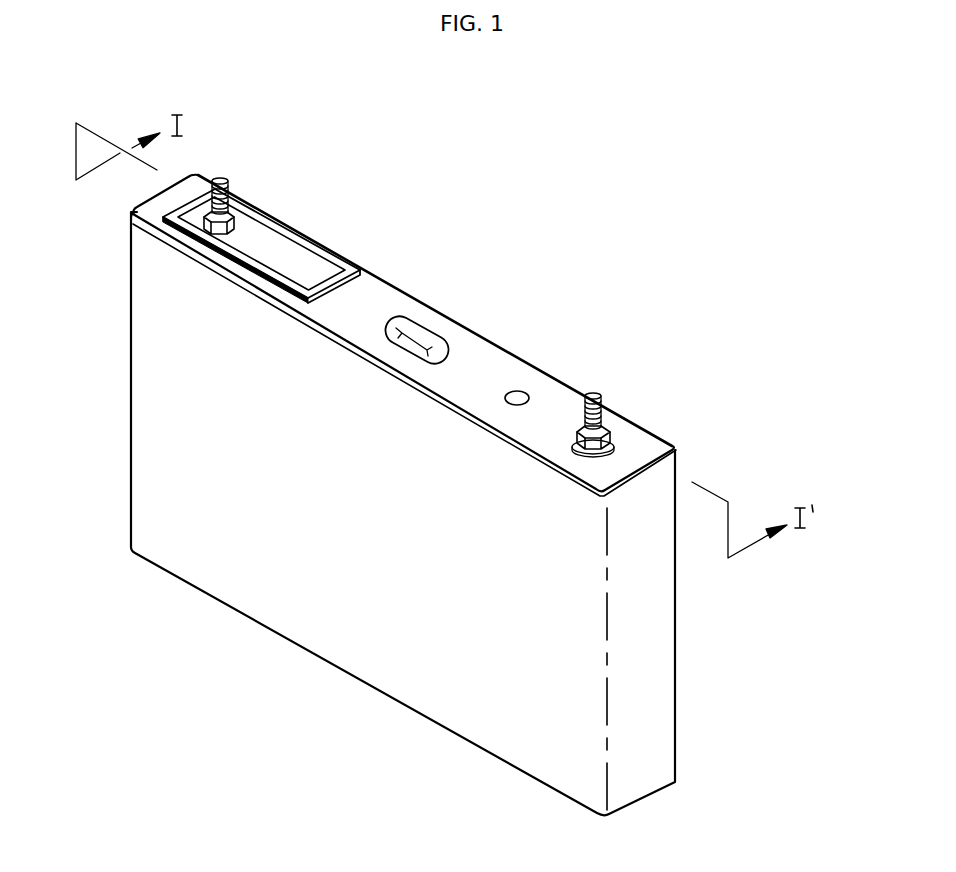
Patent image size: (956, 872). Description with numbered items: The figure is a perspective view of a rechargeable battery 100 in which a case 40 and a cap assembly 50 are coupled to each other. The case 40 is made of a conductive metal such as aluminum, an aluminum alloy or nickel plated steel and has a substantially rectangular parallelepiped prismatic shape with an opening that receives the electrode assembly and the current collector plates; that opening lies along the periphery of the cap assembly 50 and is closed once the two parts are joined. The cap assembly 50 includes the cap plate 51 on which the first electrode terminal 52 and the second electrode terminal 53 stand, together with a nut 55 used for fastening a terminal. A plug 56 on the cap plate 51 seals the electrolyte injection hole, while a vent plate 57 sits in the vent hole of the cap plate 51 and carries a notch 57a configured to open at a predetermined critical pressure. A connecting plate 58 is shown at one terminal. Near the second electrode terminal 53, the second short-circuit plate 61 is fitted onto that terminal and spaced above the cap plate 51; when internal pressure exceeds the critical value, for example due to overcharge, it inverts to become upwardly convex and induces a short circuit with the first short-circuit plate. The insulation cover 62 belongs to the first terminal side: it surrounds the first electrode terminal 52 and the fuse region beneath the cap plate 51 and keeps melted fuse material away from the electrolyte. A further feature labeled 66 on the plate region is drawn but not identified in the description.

The rechargeable battery 100 is at (452, 156).
The case 40 is at (347, 653).
The cap assembly 50 is at (505, 342).
The cap plate 51 is at (388, 303).
The first electrode terminal 52 is at (595, 392).
The second electrode terminal 53 is at (221, 180).
The nut 55 is at (207, 227).
The plug 56 is at (523, 393).
The vent plate 57 is at (420, 323).
The notch 57a is at (425, 337).
The connecting plate 58 is at (613, 442).
The second short-circuit plate 61 is at (250, 233).
The insulation cover 62 is at (368, 265).
The groove of insulating plate 66 is at (293, 235).